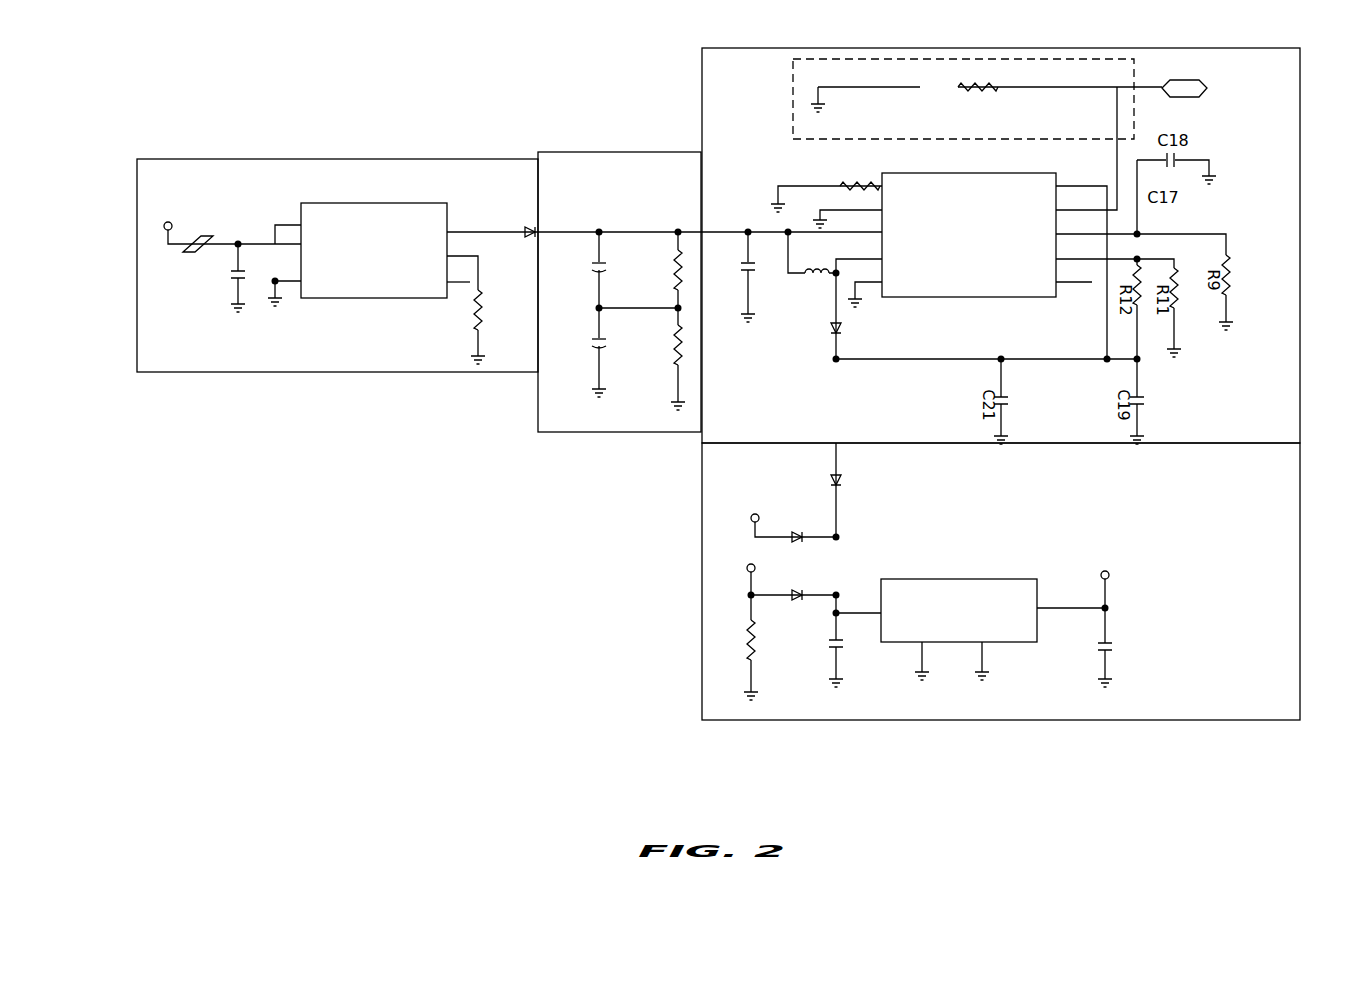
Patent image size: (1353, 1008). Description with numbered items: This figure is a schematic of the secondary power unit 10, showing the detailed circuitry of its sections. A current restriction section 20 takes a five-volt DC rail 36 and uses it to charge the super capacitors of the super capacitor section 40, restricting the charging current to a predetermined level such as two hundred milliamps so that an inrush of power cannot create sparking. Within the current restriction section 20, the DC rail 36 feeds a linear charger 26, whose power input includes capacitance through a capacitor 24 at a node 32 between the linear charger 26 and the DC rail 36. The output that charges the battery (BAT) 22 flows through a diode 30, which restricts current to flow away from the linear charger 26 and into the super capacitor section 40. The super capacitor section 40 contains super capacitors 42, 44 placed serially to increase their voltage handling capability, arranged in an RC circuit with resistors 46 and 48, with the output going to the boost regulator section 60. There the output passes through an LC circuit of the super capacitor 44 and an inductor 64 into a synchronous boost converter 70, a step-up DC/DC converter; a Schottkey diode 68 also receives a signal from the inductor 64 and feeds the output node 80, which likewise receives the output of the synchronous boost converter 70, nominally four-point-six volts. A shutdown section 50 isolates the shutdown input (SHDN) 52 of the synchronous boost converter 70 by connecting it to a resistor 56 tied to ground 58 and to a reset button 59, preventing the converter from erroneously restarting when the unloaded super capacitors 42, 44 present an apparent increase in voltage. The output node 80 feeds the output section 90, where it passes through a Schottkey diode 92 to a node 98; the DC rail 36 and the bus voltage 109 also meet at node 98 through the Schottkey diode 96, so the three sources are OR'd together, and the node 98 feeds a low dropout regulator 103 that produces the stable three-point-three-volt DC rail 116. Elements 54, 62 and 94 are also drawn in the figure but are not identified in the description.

The secondary power unit 10 is at (400, 596).
The current restriction section 20 is at (343, 159).
The battery (BAT) 22 is at (425, 203).
The capacitor 24 is at (232, 297).
The linear charger 26 is at (378, 298).
The diode 30 is at (526, 228).
The node 32 is at (238, 238).
The DC rail 36 is at (163, 203).
The super capacitor section 40 is at (597, 152).
The super capacitor 42 is at (606, 230).
The super capacitor 44 is at (596, 360).
The resistor 46 is at (687, 265).
The resistor 48 is at (688, 338).
The shutdown section 50 is at (1108, 59).
The shutdown input (SHDN) 52 is at (1000, 200).
The shutdown line 54 is at (1117, 120).
The resistor 56 is at (948, 90).
The ground 58 is at (826, 108).
The reset button 59 is at (1192, 80).
The boost regulator section 60 is at (905, 48).
The capacitor C20 62 is at (755, 310).
The inductor 64 is at (812, 270).
The Schottkey diode 68 is at (842, 326).
The synchronous boost converter 70 is at (952, 297).
The output node 80 is at (832, 361).
The output section 90 is at (702, 610).
The Schottkey diode 92 is at (840, 510).
The supply node 94 is at (792, 492).
The Schottkey diode 96 is at (812, 585).
The node 98 is at (845, 537).
The low dropout regulator 103 is at (990, 579).
The bus voltage VBUS 109 is at (746, 570).
The DC rail 116 is at (1112, 555).